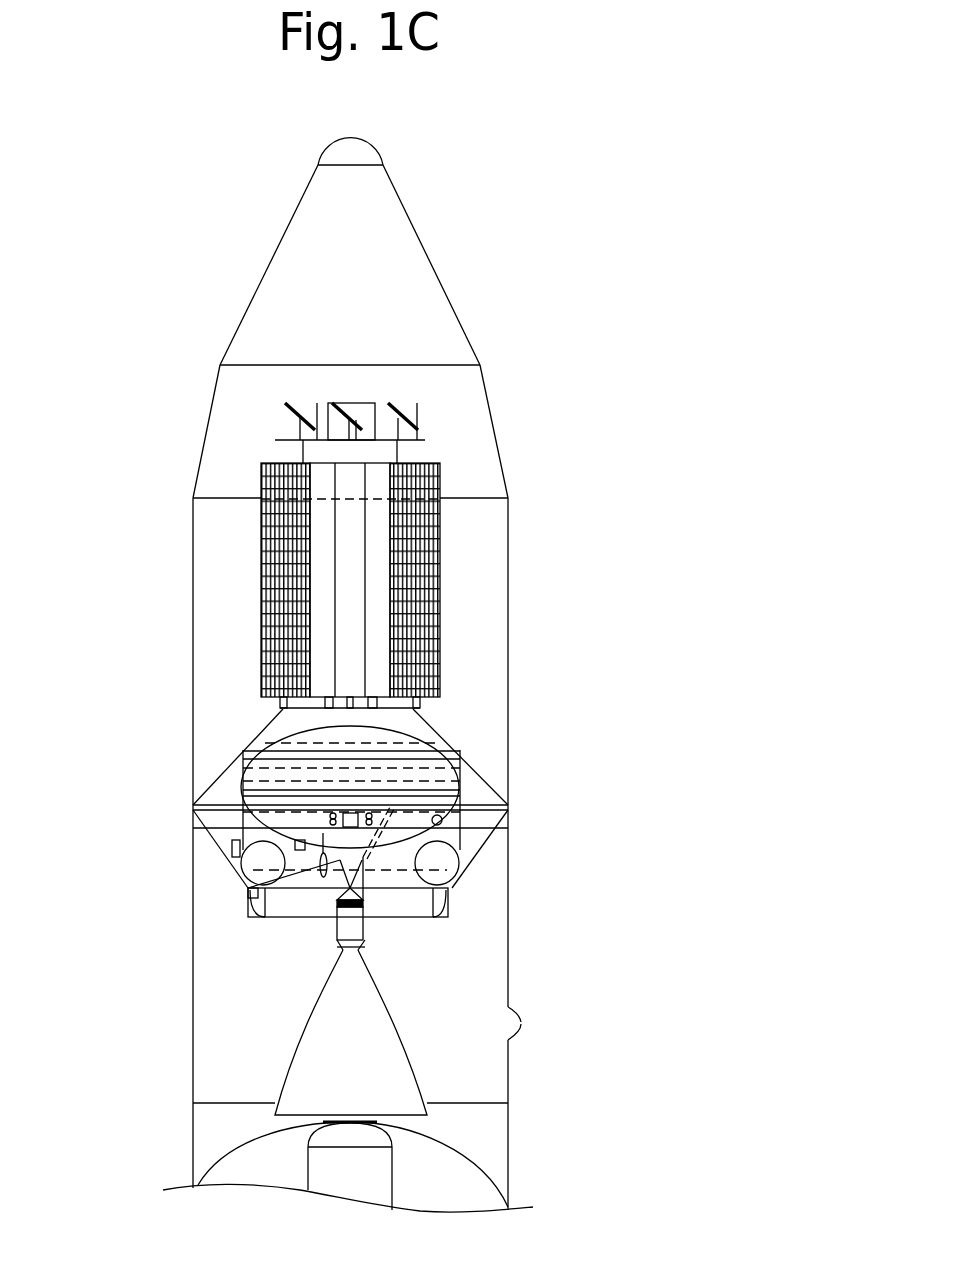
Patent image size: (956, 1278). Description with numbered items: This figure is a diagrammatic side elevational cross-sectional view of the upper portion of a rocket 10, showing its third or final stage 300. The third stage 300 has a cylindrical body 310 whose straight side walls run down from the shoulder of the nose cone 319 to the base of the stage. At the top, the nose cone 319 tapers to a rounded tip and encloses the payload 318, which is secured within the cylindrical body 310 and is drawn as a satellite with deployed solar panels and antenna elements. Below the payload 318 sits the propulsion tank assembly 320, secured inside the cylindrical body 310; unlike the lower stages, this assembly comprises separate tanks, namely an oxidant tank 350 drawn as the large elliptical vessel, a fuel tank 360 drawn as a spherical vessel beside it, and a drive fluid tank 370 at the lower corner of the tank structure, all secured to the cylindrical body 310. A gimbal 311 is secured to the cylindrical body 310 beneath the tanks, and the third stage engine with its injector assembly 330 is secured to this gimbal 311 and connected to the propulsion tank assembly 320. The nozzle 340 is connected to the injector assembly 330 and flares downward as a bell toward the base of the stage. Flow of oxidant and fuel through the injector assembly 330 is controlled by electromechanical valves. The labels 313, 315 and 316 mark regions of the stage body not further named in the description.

The rocket 10 is at (444, 675).
The third stage 300 is at (364, 855).
The cylindrical body 310 is at (192, 1003).
The gimbal 311 is at (395, 889).
The propellant tank section 313 is at (472, 997).
The lower body section 315 is at (518, 1032).
The body joint 316 is at (523, 1022).
The payload 318 is at (433, 595).
The nose cone 319 is at (430, 259).
The propulsion tank assembly 320 is at (228, 846).
The injector assembly 330 is at (333, 900).
The nozzle 340 is at (280, 1067).
The oxidant tank 350 is at (460, 777).
The fuel tank 360 is at (453, 865).
The drive fluid tank 370 is at (270, 913).